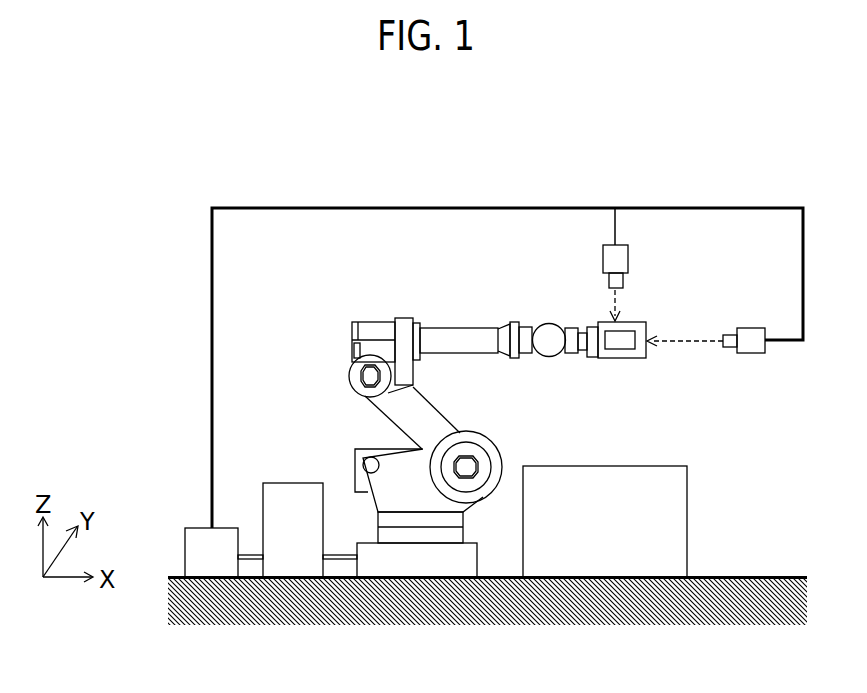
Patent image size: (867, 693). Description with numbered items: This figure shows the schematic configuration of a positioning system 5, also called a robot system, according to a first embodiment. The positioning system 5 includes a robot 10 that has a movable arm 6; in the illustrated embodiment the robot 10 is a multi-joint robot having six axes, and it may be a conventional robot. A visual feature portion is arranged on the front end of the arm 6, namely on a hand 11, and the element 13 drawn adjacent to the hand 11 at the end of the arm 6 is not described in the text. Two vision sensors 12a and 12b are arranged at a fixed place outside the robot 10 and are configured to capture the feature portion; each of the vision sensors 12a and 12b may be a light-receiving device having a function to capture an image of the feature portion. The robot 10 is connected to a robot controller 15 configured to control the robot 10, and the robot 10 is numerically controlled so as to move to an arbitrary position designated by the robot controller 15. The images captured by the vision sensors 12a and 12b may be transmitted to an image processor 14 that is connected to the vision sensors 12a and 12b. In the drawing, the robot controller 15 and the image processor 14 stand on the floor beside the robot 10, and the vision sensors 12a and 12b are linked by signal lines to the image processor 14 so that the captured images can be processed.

The positioning system 5 is at (175, 193).
The robot 10 is at (429, 406).
The movable arm 6 is at (468, 354).
The hand 11 is at (588, 358).
The hand 13 is at (634, 359).
The vision sensor 12a is at (628, 259).
The vision sensor 12b is at (752, 355).
The image processor 14 is at (198, 527).
The robot controller 15 is at (292, 483).